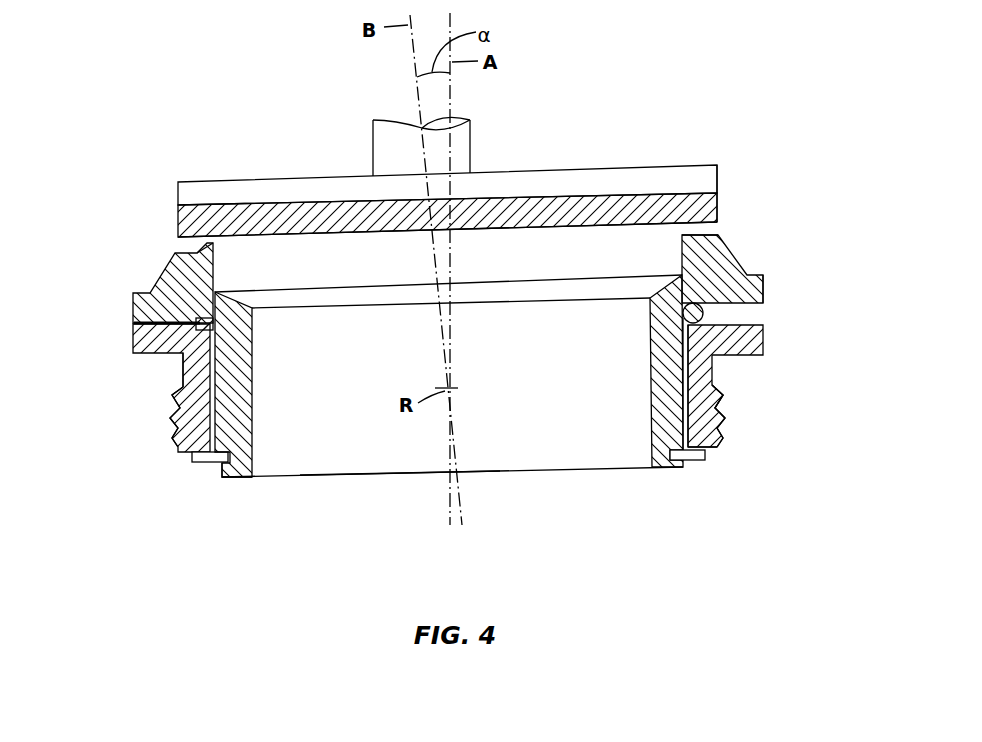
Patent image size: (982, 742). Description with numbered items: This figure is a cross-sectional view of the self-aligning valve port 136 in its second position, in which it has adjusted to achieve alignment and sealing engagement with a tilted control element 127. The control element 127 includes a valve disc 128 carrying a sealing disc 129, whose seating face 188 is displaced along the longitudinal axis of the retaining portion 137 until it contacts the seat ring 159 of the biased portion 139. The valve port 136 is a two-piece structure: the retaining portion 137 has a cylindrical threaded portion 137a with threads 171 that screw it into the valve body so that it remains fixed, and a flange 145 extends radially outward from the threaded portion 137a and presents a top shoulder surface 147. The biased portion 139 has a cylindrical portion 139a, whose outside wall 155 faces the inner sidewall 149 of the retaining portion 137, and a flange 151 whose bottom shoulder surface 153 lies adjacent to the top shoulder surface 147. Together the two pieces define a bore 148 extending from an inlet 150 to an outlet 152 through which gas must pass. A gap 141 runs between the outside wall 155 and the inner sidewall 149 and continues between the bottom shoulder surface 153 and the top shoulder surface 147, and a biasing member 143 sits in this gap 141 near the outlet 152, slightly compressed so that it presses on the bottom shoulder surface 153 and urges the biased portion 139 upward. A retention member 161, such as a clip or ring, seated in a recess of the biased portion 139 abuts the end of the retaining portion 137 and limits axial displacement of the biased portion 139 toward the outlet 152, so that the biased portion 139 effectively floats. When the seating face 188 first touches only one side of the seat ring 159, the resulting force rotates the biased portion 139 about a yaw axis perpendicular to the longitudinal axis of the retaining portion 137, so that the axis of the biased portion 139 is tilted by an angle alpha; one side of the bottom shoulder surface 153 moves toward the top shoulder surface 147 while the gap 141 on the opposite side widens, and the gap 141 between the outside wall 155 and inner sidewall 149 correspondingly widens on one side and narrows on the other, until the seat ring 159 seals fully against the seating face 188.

The control element 127 is at (568, 170).
The valve disc 128 is at (243, 188).
The sealing disc 129 is at (233, 212).
The seating face 188 is at (204, 238).
The outlet 152 is at (667, 223).
The seat ring 159 is at (203, 245).
The flange 151 is at (145, 303).
The bottom shoulder surface 153 is at (160, 324).
The flange 145 is at (150, 343).
The top shoulder surface 147 is at (177, 330).
The outside wall 155 is at (213, 410).
The inner sidewall 149 is at (193, 441).
The bore 148 is at (308, 468).
The cylindrical portion 139a is at (237, 476).
The inlet 150 is at (382, 474).
The biased portion 139 is at (722, 274).
The valve port 136 is at (830, 272).
The biasing member 143 is at (707, 315).
The gap 141 is at (707, 313).
The retaining portion 137 is at (708, 393).
The threaded portion 137a is at (730, 417).
The threads 171 is at (713, 445).
The retention member 161 is at (692, 462).